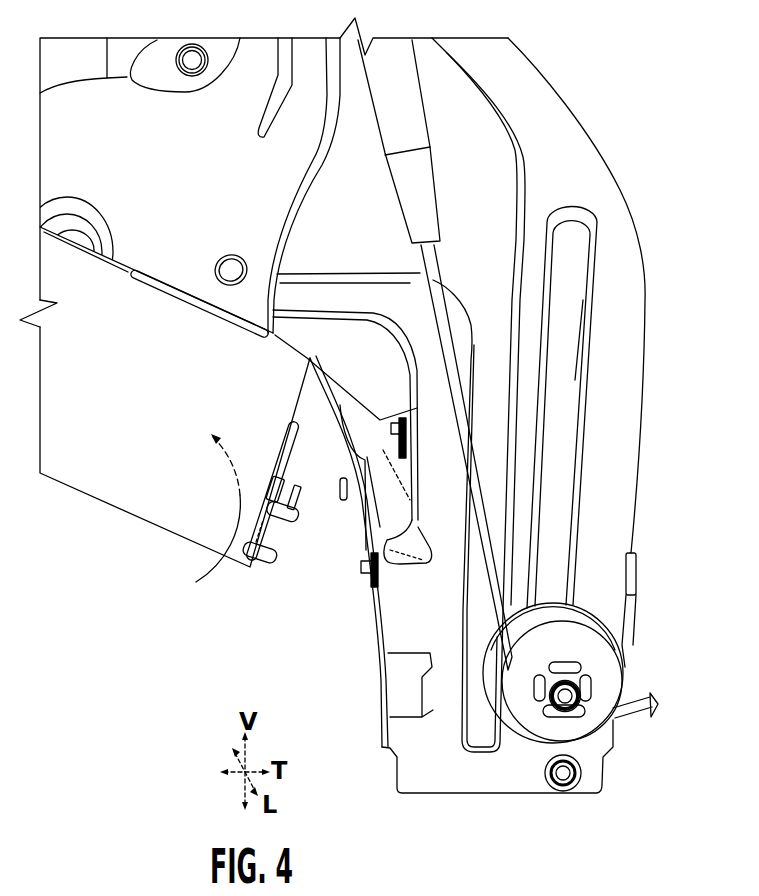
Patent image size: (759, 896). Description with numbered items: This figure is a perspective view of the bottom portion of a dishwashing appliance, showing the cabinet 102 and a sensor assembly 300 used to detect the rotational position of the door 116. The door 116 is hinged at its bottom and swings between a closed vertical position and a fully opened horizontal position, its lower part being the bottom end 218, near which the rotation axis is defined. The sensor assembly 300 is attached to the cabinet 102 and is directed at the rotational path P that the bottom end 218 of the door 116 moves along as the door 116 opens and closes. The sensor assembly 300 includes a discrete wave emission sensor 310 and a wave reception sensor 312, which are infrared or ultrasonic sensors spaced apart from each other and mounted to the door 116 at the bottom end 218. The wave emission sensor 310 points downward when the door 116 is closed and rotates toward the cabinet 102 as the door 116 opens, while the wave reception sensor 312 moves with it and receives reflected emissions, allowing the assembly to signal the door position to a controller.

The cabinet 102 is at (472, 782).
The door 116 is at (138, 502).
The bottom end 218 is at (318, 457).
The sensor assembly 300 is at (250, 584).
The wave emission sensor 310 is at (316, 530).
The wave reception sensor 312 is at (283, 557).
The rotational path P is at (215, 525).